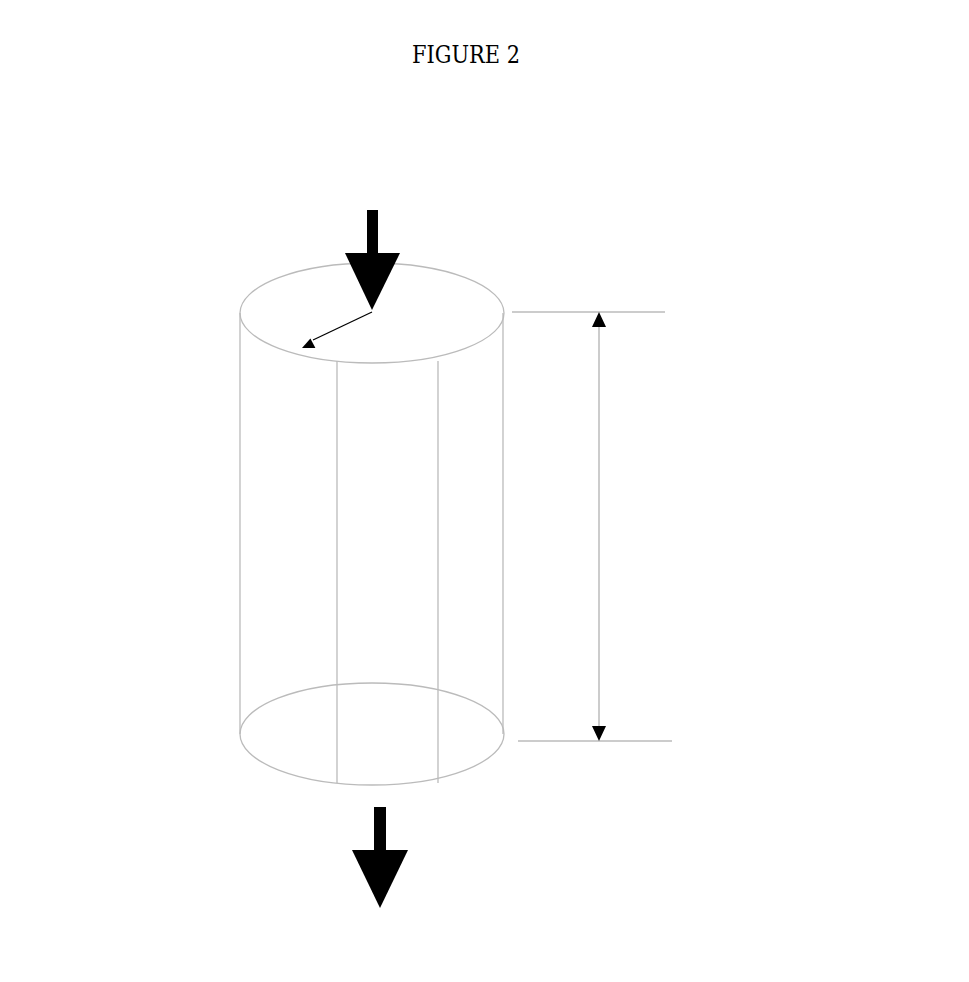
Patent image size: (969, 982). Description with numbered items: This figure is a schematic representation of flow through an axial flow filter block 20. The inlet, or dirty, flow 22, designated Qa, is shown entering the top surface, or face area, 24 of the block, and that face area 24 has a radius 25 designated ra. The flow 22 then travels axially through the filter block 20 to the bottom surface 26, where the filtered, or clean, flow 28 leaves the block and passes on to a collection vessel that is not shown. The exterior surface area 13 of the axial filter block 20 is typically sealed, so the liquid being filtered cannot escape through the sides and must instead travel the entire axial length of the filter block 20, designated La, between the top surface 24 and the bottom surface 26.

The axial flow filter block 20 is at (152, 172).
The inlet flow 22 is at (403, 155).
The top surface 24 is at (450, 285).
The radius 25 is at (348, 323).
The bottom surface 26 is at (662, 510).
The exterior surface area 13 is at (240, 574).
The clean flow 28 is at (390, 822).